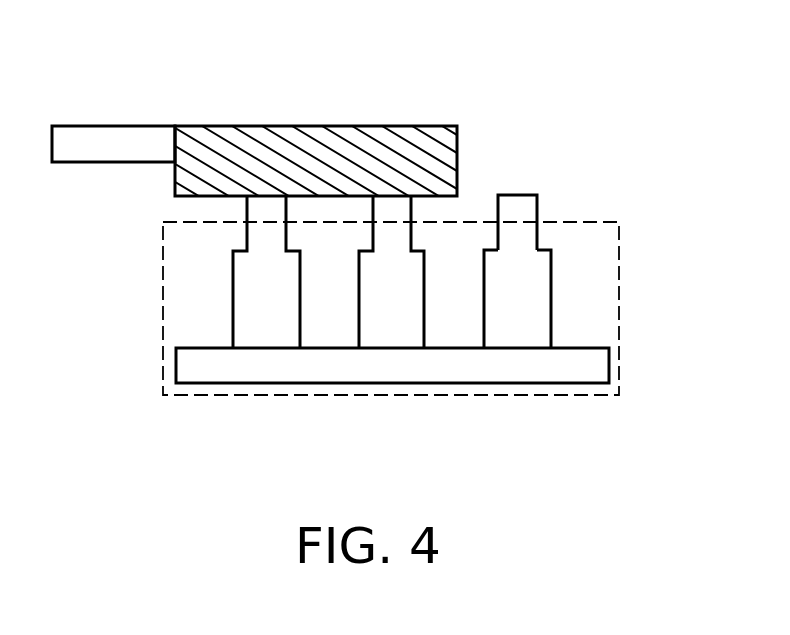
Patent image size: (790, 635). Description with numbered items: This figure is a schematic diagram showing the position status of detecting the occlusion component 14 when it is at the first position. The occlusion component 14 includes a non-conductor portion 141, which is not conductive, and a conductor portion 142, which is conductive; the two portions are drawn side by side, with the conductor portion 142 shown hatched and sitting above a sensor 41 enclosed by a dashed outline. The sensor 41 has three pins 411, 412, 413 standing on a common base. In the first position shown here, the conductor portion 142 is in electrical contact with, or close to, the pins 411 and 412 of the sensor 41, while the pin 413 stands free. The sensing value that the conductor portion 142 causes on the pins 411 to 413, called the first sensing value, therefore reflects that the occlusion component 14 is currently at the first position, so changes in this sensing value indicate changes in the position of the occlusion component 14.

The occlusion component 14 is at (340, 47).
The non-conductor portion 141 is at (120, 137).
The conductor portion 142 is at (321, 137).
The sensor 41 is at (619, 298).
The pin 411 is at (267, 328).
The pin 412 is at (392, 328).
The pin 413 is at (518, 328).